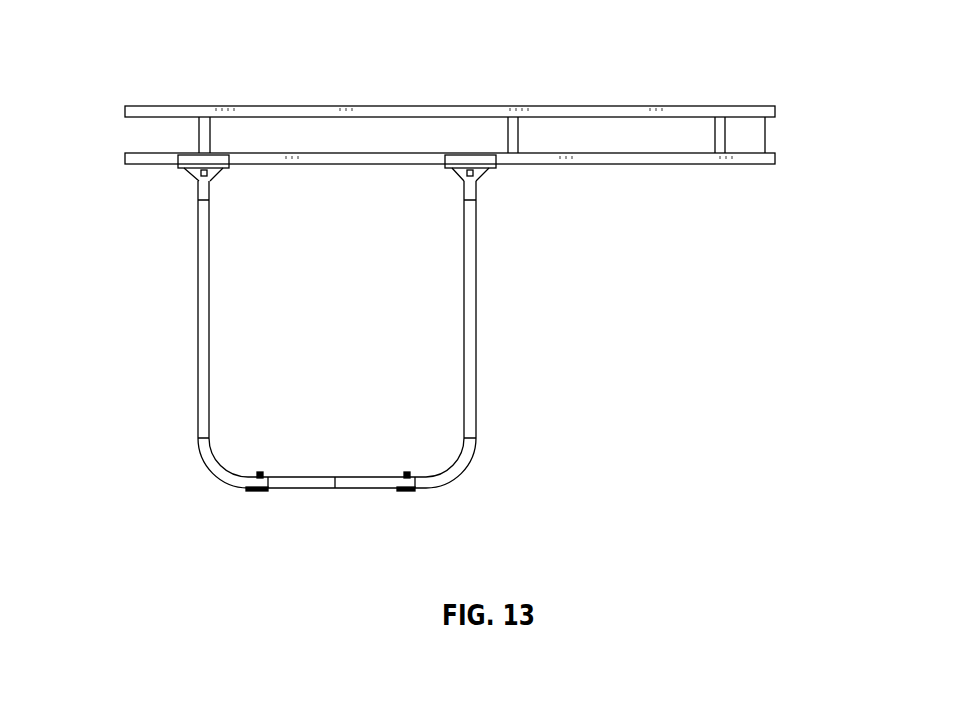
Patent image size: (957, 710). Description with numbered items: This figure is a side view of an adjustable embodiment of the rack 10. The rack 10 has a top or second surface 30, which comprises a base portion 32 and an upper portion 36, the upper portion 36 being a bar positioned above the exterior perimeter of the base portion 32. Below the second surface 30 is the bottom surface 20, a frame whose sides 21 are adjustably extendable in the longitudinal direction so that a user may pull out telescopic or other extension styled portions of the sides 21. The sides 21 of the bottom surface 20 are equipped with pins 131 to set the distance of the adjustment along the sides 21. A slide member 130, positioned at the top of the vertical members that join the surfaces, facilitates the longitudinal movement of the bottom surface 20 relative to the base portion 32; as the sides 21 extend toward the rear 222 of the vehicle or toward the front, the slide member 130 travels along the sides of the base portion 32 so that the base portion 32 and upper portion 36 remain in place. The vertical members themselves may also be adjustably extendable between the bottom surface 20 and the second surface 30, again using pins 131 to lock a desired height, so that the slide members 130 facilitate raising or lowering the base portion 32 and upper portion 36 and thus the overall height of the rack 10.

The rack 10 is at (447, 303).
The second surface 30 is at (447, 123).
The upper portion 36 is at (125, 112).
The base portion 32 is at (125, 158).
The slide member 130 is at (210, 163).
The bottom surface 20 is at (274, 375).
The rear of the vehicle 222 is at (274, 375).
The sides 21 is at (198, 330).
The pins 131 is at (260, 471).